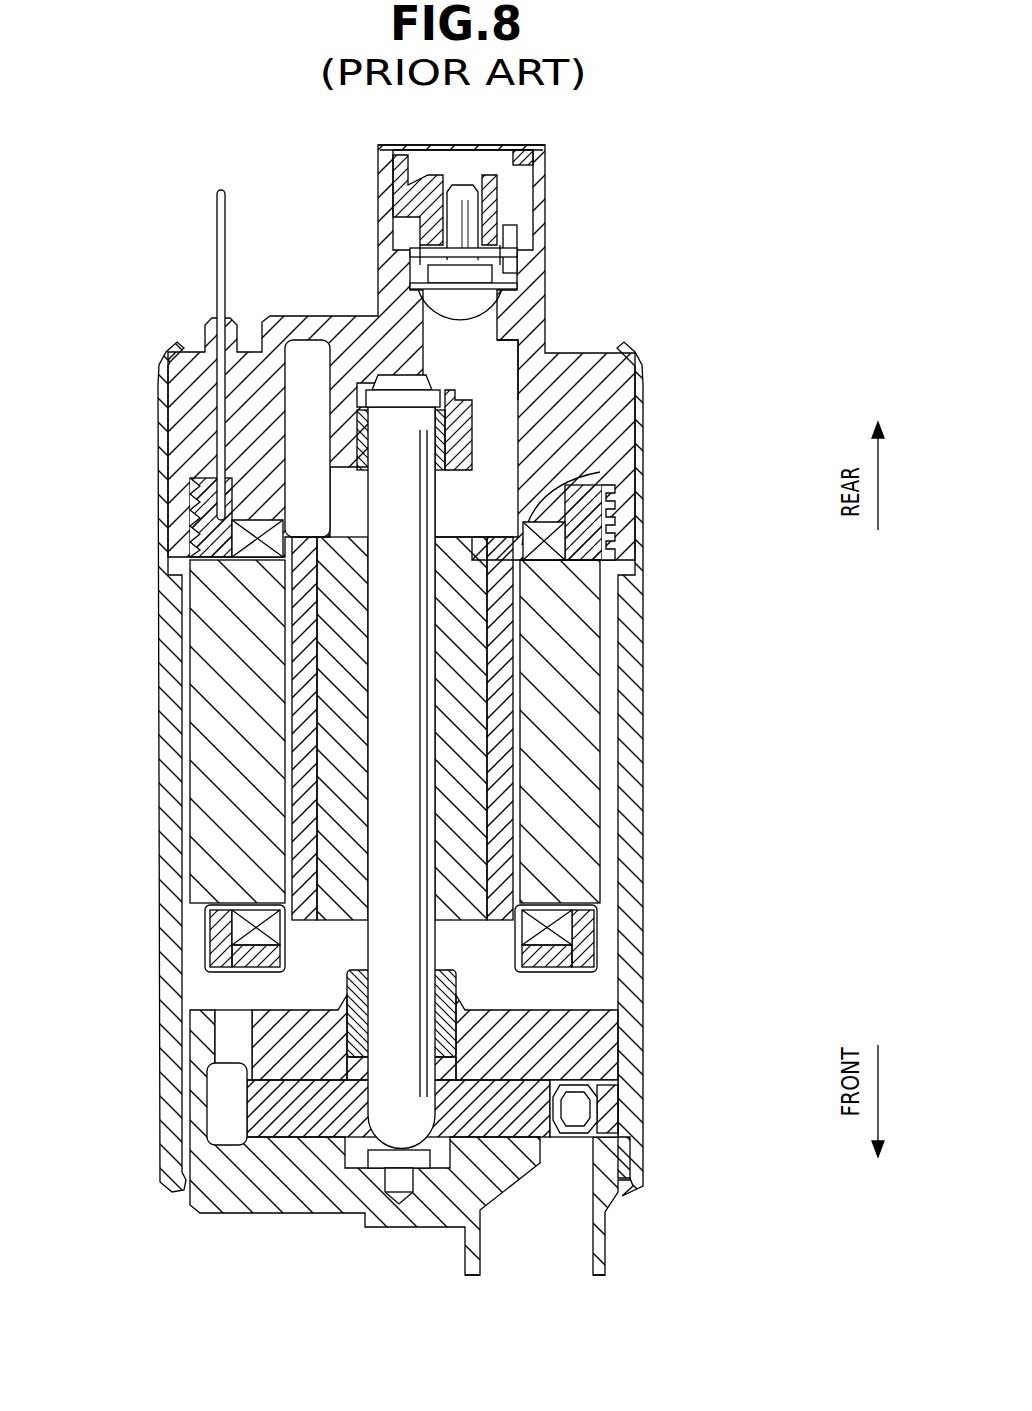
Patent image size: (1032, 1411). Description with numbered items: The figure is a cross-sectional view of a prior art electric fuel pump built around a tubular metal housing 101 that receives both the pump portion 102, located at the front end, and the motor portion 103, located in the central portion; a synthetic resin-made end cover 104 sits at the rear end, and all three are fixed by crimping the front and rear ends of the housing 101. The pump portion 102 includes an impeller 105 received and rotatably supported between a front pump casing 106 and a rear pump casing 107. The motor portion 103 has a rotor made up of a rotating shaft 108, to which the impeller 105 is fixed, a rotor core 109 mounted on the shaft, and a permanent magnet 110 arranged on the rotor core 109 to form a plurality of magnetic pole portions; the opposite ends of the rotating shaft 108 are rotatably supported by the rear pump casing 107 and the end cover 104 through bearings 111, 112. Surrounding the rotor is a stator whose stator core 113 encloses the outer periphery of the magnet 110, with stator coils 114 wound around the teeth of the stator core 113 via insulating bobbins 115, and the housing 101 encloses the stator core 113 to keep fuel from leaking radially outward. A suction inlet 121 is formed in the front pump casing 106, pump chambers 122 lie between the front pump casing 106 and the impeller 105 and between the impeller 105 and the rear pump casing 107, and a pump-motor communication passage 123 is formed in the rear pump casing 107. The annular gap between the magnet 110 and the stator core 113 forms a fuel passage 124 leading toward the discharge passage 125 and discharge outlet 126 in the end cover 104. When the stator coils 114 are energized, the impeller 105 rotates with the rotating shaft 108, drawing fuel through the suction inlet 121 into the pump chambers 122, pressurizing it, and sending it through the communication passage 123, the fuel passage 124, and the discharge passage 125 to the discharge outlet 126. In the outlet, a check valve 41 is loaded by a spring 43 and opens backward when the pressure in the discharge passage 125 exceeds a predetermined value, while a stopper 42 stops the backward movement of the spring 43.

The check valve 41 is at (462, 301).
The stopper 42 is at (512, 204).
The spring 43 is at (512, 273).
The housing 101 is at (645, 775).
The pump portion 102 is at (350, 1166).
The motor portion 103 is at (145, 548).
The end cover 104 is at (312, 316).
The impeller 105 is at (258, 1136).
The front pump casing 106 is at (312, 1214).
The rear pump casing 107 is at (232, 1001).
The rotating shaft 108 is at (410, 959).
The rotor core 109 is at (470, 633).
The permanent magnet 110 is at (505, 702).
The bearing 111 is at (440, 1031).
The bearing 112 is at (468, 445).
The stator core 113 is at (570, 861).
The stator coils 114 is at (566, 546).
The insulating bobbins 115 is at (580, 493).
The suction inlet 121 is at (538, 1274).
The pump chambers 122 is at (222, 1069).
The pump-motor communication passage 123 is at (236, 1016).
The fuel passage 124 is at (280, 668).
The discharge passage 125 is at (497, 356).
The discharge outlet 126 is at (458, 145).